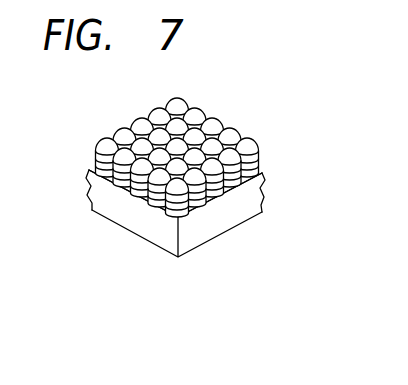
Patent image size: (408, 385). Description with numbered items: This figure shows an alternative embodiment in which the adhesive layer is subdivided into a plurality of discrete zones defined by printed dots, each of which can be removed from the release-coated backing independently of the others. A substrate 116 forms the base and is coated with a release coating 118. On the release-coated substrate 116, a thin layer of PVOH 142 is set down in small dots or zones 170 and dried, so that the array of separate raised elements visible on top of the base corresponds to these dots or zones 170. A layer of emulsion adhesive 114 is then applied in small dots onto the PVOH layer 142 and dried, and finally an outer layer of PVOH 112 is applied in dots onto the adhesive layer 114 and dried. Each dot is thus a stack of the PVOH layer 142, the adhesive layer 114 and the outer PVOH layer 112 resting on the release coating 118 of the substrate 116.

The outer layer of PVOH 112 is at (282, 120).
The layer of emulsion adhesive 114 is at (262, 158).
The substrate 116 is at (171, 200).
The release coating 118 is at (89, 170).
The thin layer of PVOH 142 is at (264, 174).
The dots or zones 170 is at (212, 178).